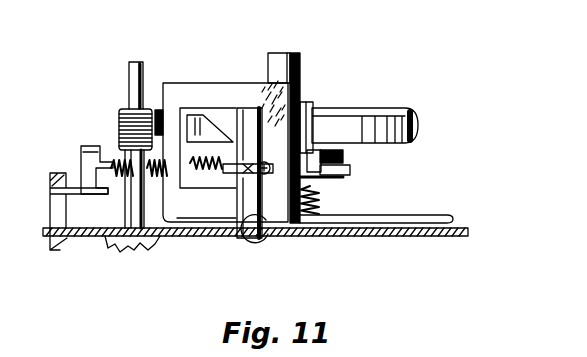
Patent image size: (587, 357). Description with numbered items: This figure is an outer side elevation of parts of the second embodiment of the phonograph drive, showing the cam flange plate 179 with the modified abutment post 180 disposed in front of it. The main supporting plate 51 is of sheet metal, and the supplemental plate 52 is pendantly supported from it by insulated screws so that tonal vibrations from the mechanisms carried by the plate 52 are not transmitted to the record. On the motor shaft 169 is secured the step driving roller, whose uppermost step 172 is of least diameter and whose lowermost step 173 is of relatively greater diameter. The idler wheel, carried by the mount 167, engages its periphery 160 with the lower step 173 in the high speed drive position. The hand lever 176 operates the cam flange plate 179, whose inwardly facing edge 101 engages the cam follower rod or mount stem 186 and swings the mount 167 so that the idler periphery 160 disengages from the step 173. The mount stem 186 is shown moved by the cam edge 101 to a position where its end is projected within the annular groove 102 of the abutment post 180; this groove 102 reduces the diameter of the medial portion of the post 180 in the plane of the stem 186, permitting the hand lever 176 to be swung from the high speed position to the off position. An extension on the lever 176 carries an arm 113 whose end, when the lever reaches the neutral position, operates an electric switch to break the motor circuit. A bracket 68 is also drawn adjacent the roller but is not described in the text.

The supplemental plate 52 is at (459, 237).
The hand lever 176 is at (384, 230).
The driving roller step 172 is at (128, 70).
The lower driving roller step 173 is at (119, 120).
The bracket 68 is at (110, 158).
The main supporting plate 51 is at (56, 197).
The motor shaft 169 is at (132, 208).
The cam flange plate 179 is at (218, 83).
The annular groove 102 is at (243, 190).
The mount stem 186 is at (270, 168).
The inwardly facing edge 101 is at (276, 162).
The abutment post 180 is at (268, 224).
The idler wheel periphery 160 is at (420, 130).
The mount 167 is at (346, 178).
The lever arm 113 is at (440, 215).